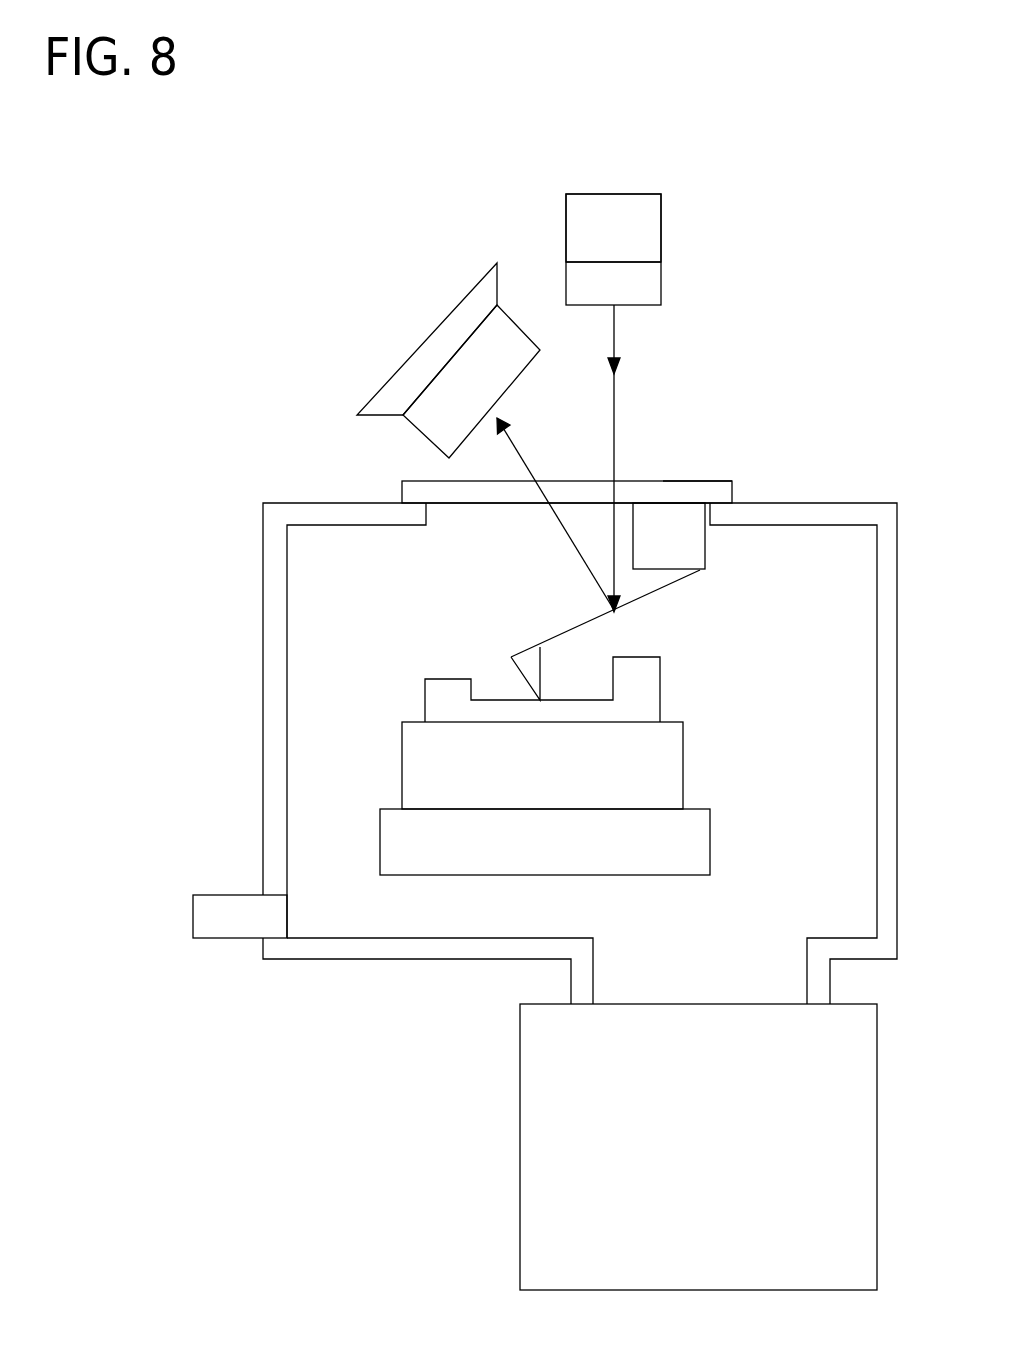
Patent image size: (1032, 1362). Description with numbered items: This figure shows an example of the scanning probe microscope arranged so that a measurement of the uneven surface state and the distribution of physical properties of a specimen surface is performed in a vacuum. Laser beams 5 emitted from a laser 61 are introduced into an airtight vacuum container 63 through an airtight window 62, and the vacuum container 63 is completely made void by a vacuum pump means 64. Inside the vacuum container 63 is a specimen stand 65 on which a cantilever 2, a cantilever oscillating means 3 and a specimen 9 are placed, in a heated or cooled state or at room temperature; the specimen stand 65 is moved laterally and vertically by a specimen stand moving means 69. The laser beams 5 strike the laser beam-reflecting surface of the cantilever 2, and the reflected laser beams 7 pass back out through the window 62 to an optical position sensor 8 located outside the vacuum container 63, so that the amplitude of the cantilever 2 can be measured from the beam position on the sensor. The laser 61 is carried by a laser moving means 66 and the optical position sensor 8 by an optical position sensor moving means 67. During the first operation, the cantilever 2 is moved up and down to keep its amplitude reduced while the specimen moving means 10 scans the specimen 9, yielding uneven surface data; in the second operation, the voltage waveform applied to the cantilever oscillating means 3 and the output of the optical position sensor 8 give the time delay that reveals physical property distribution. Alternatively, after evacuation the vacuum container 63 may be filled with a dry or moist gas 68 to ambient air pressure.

The cantilever 2 is at (533, 635).
The cantilever oscillating means 3 is at (677, 550).
The laser beams 5 is at (614, 393).
The reflected laser beams 7 is at (518, 458).
The optical position sensor 8 is at (448, 393).
The specimen 9 is at (446, 701).
The specimen moving means 10 is at (420, 1103).
The laser 61 is at (661, 280).
The window 62 is at (663, 481).
The vacuum container 63 is at (260, 545).
The vacuum pump means 64 is at (525, 1178).
The specimen stand 65 is at (418, 778).
The laser moving means 66 is at (566, 237).
The optical position sensor moving means 67 is at (448, 305).
The gas 68 is at (217, 938).
The specimen stand moving means 69 is at (428, 852).